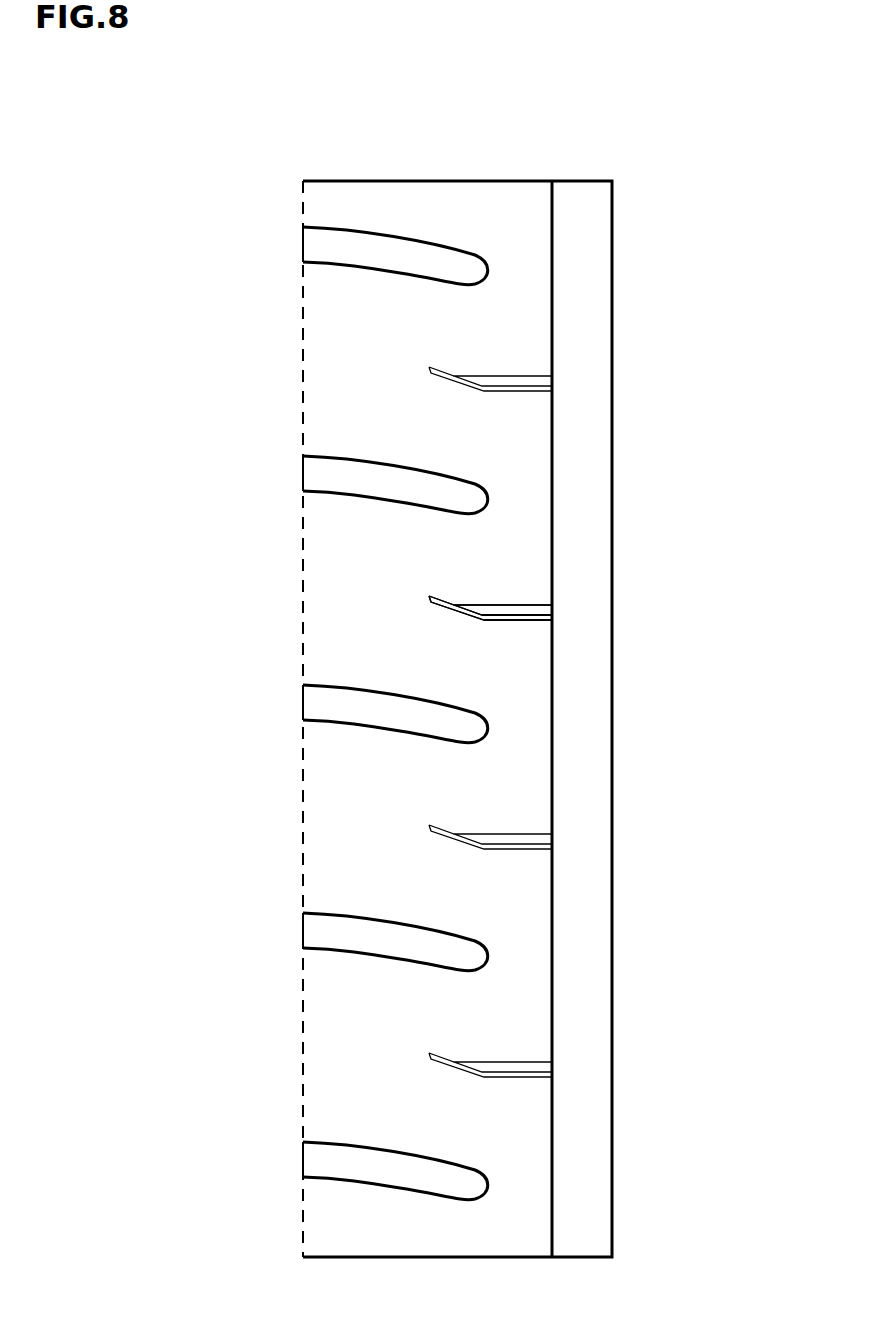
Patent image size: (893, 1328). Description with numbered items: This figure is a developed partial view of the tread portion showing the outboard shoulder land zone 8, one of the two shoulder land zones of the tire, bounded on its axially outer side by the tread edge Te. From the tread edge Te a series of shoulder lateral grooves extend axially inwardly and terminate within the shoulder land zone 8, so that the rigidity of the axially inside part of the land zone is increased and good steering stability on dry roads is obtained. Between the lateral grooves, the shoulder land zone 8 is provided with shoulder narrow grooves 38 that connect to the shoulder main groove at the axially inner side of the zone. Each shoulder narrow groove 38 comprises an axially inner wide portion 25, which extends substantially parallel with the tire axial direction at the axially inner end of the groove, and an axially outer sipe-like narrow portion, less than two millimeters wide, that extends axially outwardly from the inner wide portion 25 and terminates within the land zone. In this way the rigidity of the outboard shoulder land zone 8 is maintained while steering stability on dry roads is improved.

The shoulder land zone 8 is at (438, 215).
The axially inner wide portion 25 is at (525, 610).
The shoulder narrow groove 38 is at (745, 493).
The tread edge Te is at (302, 290).